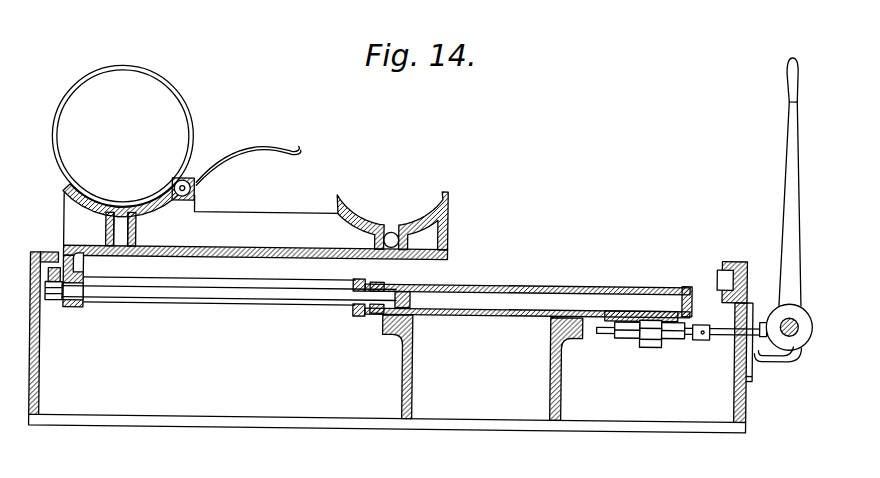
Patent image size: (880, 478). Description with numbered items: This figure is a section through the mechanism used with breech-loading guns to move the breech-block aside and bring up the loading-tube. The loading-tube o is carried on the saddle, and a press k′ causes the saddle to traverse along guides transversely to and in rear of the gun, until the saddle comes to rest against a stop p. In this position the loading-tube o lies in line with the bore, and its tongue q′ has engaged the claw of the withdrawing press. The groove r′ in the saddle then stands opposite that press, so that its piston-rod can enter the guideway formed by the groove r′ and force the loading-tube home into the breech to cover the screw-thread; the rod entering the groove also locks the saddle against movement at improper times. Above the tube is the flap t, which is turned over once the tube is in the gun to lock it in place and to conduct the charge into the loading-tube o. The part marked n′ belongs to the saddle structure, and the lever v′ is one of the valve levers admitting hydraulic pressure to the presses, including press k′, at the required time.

The loading-tube o is at (123, 141).
The flap t is at (248, 157).
The tongue q′ is at (95, 219).
The groove r′ is at (277, 219).
The top plate n′ is at (255, 252).
The press k′ is at (406, 349).
The stop p is at (388, 342).
The lever v′ is at (780, 219).